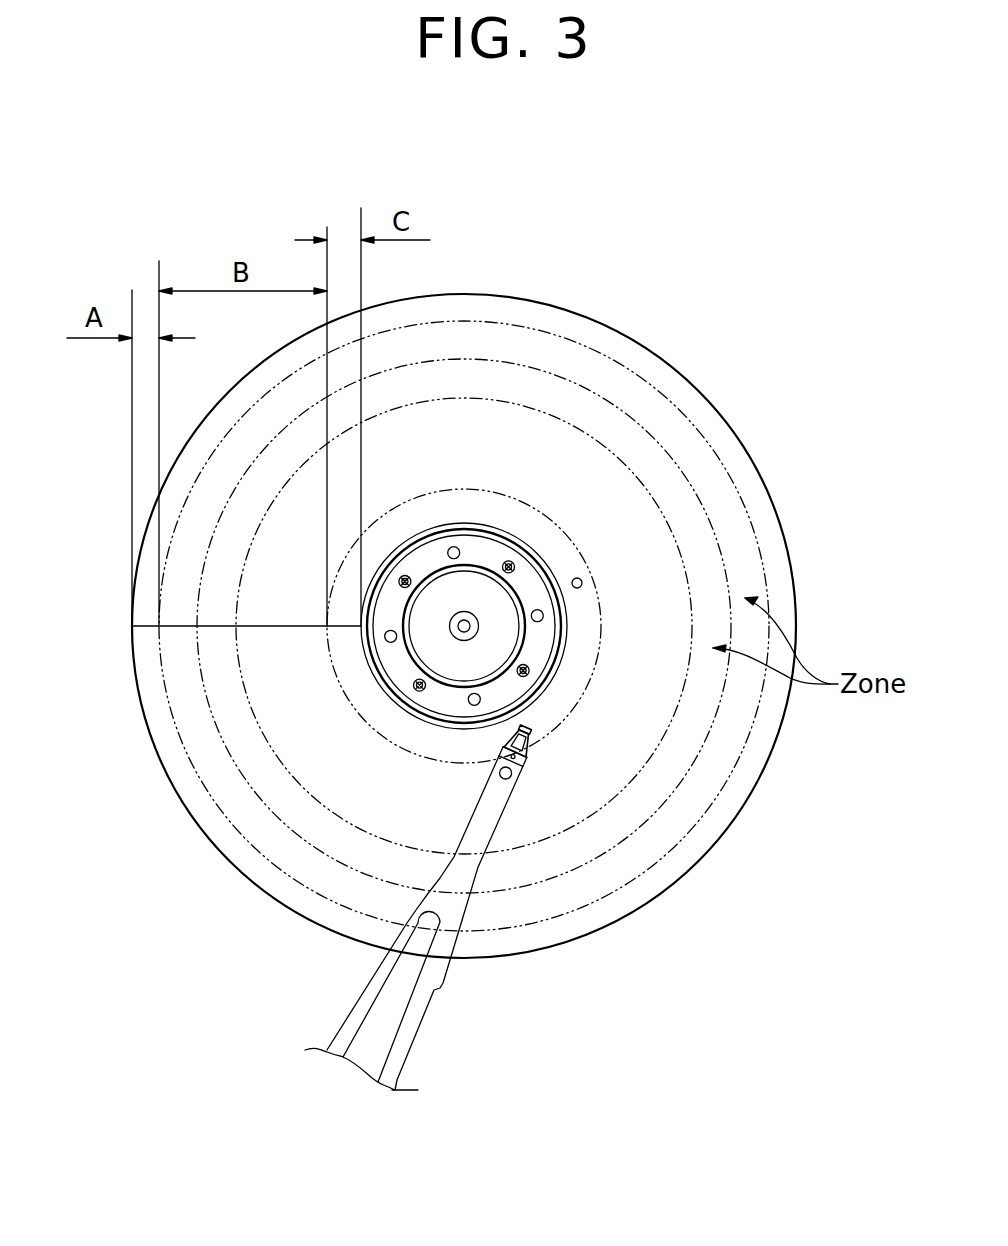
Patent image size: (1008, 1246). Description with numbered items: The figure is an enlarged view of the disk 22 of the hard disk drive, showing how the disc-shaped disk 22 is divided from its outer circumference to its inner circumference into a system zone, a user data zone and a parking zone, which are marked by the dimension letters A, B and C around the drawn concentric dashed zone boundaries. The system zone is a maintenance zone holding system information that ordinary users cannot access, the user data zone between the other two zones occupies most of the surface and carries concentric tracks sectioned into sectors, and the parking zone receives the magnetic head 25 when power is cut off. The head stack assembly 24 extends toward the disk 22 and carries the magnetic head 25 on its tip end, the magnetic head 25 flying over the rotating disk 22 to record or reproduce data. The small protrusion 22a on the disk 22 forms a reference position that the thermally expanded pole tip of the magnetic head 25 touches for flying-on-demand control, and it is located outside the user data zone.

The disk 22 is at (166, 772).
The protrusion 22a is at (583, 583).
The head stack assembly 24 is at (442, 1025).
The magnetic head 25 is at (530, 731).